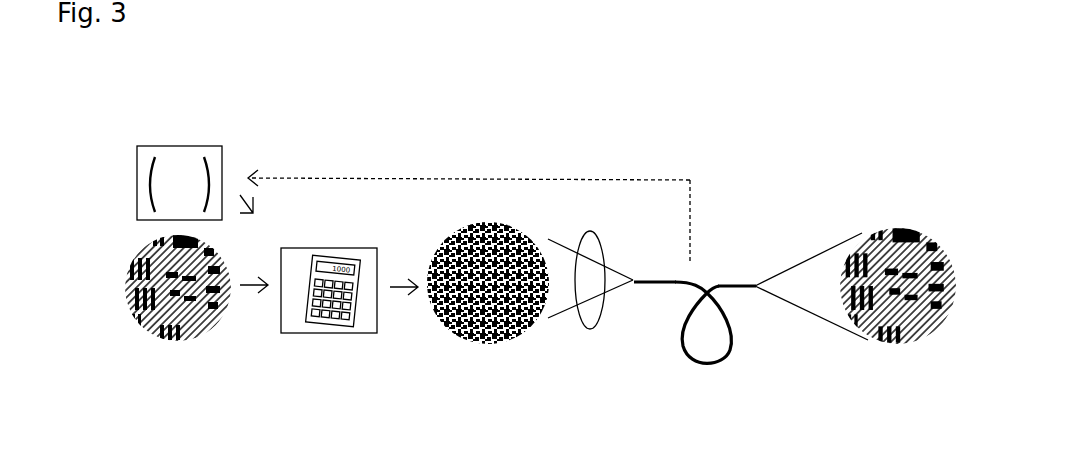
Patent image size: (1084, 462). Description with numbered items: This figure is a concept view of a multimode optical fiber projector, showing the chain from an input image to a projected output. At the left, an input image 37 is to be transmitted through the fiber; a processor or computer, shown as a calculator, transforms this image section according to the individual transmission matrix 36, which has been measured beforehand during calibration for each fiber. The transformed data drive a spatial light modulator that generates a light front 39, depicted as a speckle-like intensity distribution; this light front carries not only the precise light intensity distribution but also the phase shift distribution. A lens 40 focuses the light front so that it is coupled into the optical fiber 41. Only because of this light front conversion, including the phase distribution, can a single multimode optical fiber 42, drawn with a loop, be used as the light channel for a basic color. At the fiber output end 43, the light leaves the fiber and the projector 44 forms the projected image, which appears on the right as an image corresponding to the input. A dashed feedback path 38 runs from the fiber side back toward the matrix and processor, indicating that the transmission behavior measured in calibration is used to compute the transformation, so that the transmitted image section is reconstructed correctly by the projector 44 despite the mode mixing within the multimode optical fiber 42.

The transmission matrix 36 is at (148, 185).
The input image 37 is at (130, 267).
The feedback signal 38 is at (365, 205).
The light front 39 is at (475, 318).
The lens 40 is at (583, 327).
The optical fiber 41 is at (637, 292).
The multimode optical fiber 42 is at (698, 365).
The fiber output end 43 is at (752, 292).
The projector 44 is at (858, 322).